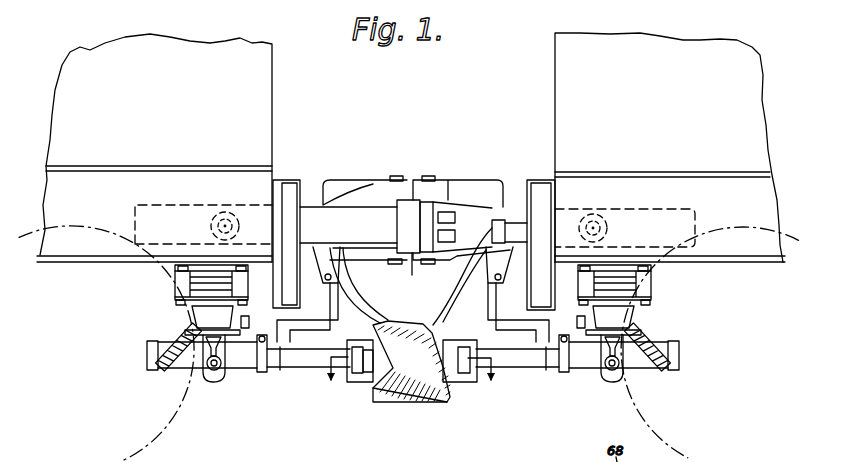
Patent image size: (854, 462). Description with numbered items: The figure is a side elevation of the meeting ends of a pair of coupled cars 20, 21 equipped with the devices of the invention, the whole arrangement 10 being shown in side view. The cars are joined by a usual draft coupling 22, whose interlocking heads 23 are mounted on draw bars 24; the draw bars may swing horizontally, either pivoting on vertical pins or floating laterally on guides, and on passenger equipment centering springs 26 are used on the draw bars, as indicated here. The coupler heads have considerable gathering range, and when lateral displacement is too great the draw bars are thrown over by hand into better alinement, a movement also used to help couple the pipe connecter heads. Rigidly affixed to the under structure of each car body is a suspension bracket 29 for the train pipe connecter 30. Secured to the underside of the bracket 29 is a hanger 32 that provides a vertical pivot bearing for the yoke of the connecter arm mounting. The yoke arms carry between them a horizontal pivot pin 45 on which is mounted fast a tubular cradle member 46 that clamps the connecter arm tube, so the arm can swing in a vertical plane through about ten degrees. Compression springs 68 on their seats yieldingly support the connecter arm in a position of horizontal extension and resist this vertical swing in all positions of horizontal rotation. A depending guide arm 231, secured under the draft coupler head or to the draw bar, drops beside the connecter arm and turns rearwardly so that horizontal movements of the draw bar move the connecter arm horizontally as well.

The truck center line 10 is at (408, 382).
The car 20 is at (154, 148).
The car 21 is at (670, 147).
The draft coupling 22 is at (409, 177).
The interlocking heads 23 is at (358, 179).
The draw bars 24 is at (523, 166).
The centering springs 26 is at (603, 221).
The suspension bracket 29 is at (174, 285).
The train pipe connecter 30 is at (310, 370).
The hanger 32 is at (413, 320).
The horizontal pivot pin 45 is at (211, 374).
The cradle member 46 is at (413, 353).
The compression springs 68 is at (187, 332).
The depending guide arm 231 is at (497, 316).